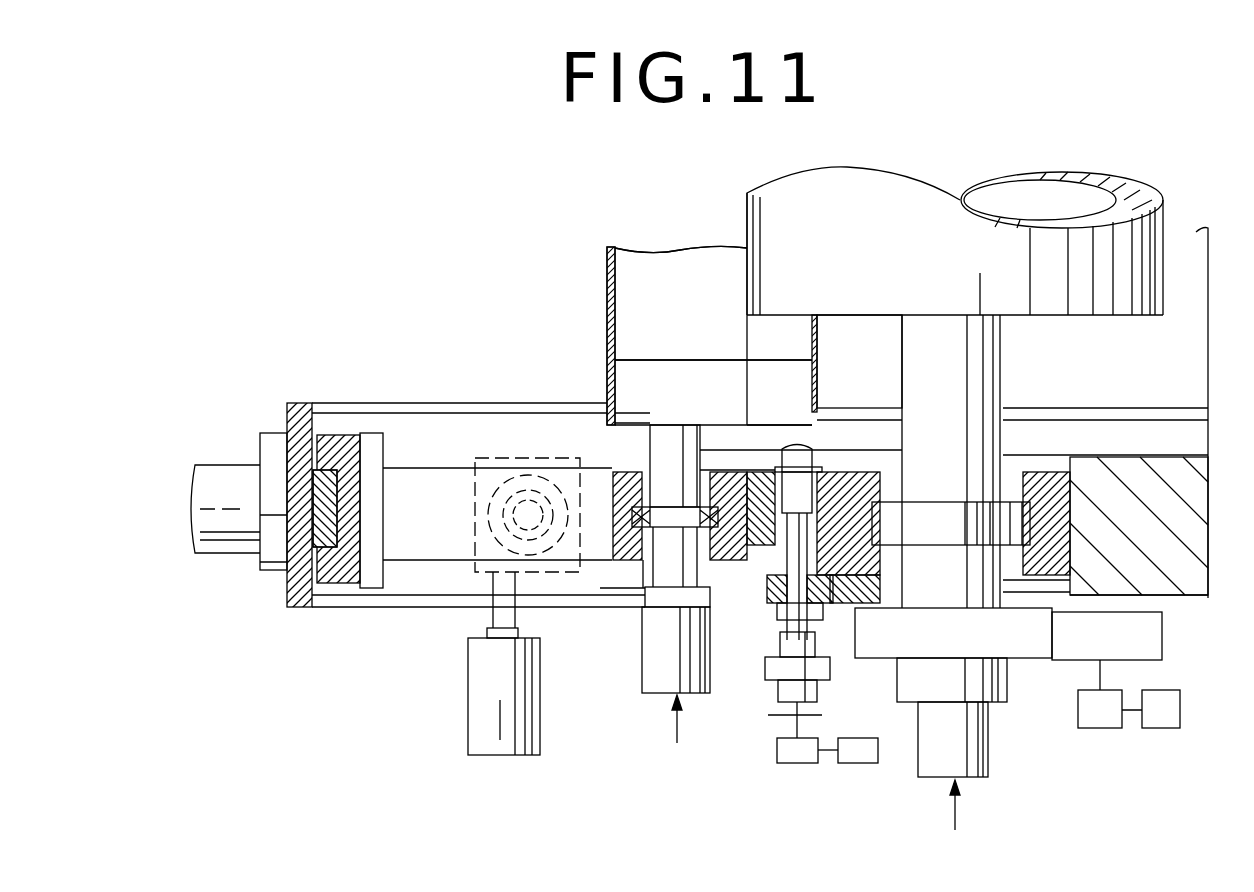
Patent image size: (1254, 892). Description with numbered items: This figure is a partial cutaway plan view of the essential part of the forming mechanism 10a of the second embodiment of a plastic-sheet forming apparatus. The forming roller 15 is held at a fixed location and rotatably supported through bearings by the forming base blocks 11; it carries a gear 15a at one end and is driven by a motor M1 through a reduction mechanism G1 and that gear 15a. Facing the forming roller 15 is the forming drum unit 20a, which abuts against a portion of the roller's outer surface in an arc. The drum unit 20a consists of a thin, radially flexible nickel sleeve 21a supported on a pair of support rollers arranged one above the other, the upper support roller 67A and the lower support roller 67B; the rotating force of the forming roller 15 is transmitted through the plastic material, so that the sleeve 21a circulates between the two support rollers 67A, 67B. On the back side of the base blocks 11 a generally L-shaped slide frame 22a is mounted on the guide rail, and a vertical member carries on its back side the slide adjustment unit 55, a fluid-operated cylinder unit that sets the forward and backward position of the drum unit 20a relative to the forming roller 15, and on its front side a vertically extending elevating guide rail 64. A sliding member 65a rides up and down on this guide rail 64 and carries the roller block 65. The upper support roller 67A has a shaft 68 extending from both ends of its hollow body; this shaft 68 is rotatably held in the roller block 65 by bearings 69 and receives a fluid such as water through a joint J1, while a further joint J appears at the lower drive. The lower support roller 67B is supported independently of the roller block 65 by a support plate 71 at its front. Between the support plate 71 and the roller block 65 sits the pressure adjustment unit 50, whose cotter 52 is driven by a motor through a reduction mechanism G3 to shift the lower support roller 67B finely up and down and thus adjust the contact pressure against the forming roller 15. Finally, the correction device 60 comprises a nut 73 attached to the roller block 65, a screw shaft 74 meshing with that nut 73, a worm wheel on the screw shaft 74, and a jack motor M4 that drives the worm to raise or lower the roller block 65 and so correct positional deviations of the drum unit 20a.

The forming mechanism 10a is at (585, 217).
The forming roller 15 is at (902, 268).
The forming drum unit 20a is at (512, 246).
The arc-like sleeve 21a is at (607, 268).
The lower support roller 67B is at (793, 383).
The upper support roller 67A is at (607, 372).
The slide frame 22a is at (300, 403).
The sliding member 65a is at (347, 420).
The roller block 65 is at (407, 420).
The correction device 60 is at (492, 446).
The elevating guide rail 64 is at (315, 505).
The slide adjustment unit 55 is at (232, 540).
The shaft 68 is at (655, 447).
The cotter 52 is at (872, 483).
The forming base block 11 is at (1130, 445).
The bearing 69 is at (625, 562).
The support plate 71 is at (777, 607).
The screw shaft 74 is at (510, 548).
The nut 73 is at (497, 578).
The jack motor M4 is at (480, 703).
The joint J1 is at (650, 672).
The pressure adjustment unit 50 is at (758, 560).
The gear 15a is at (1035, 656).
The joint J is at (990, 748).
The reduction mechanism G3 is at (797, 763).
The reduction mechanism G1 is at (1098, 728).
The motor M1 is at (1162, 728).